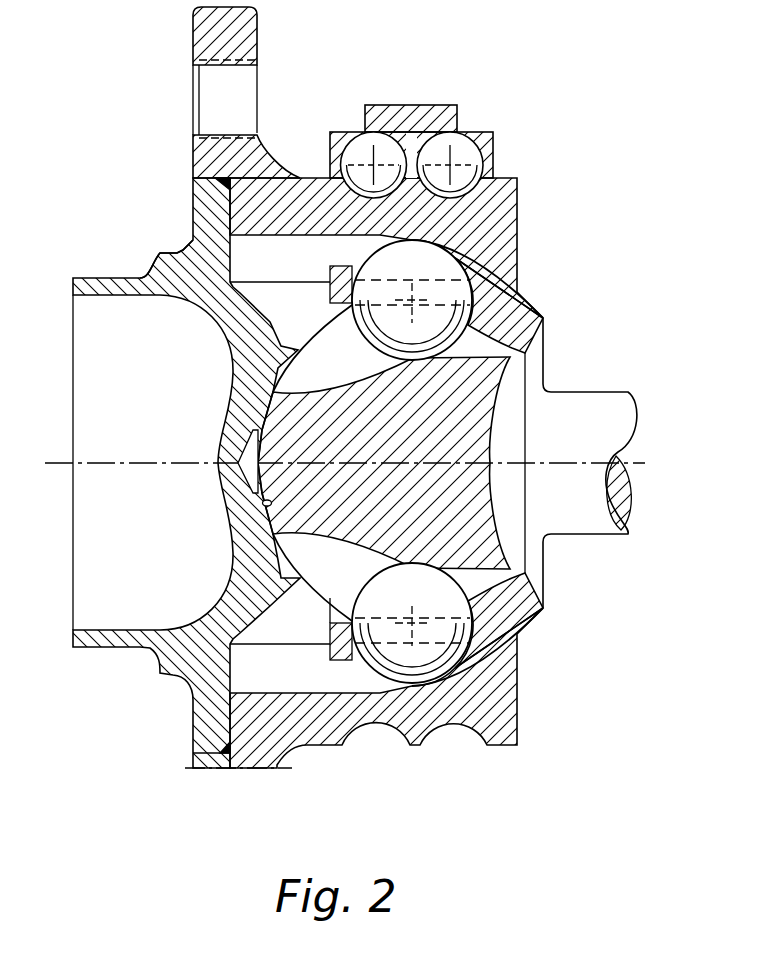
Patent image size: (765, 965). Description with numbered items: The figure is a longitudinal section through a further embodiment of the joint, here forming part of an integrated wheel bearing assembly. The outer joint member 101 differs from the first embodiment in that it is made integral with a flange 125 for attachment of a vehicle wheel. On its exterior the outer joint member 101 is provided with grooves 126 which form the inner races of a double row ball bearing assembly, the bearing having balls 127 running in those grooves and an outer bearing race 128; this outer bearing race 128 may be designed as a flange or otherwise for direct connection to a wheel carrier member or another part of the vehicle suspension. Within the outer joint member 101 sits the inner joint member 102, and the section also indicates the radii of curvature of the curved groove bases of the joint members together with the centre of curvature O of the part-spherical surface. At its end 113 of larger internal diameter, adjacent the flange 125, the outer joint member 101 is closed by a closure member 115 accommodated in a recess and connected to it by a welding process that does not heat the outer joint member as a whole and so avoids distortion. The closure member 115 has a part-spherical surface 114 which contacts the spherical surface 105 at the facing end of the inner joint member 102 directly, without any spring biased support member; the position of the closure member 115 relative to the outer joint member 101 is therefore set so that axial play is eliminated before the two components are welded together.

The outer joint member 101 is at (500, 213).
The inner joint member 102 is at (485, 408).
The spherical surface 105 is at (278, 356).
The end of larger internal diameter 113 is at (177, 252).
The part-spherical surface 114 is at (265, 503).
The closure member 115 is at (210, 725).
The flange 125 is at (220, 35).
The grooves 126 is at (340, 175).
The balls 127 is at (366, 148).
The outer bearing race 128 is at (410, 118).
The centre of curvature O is at (428, 440).